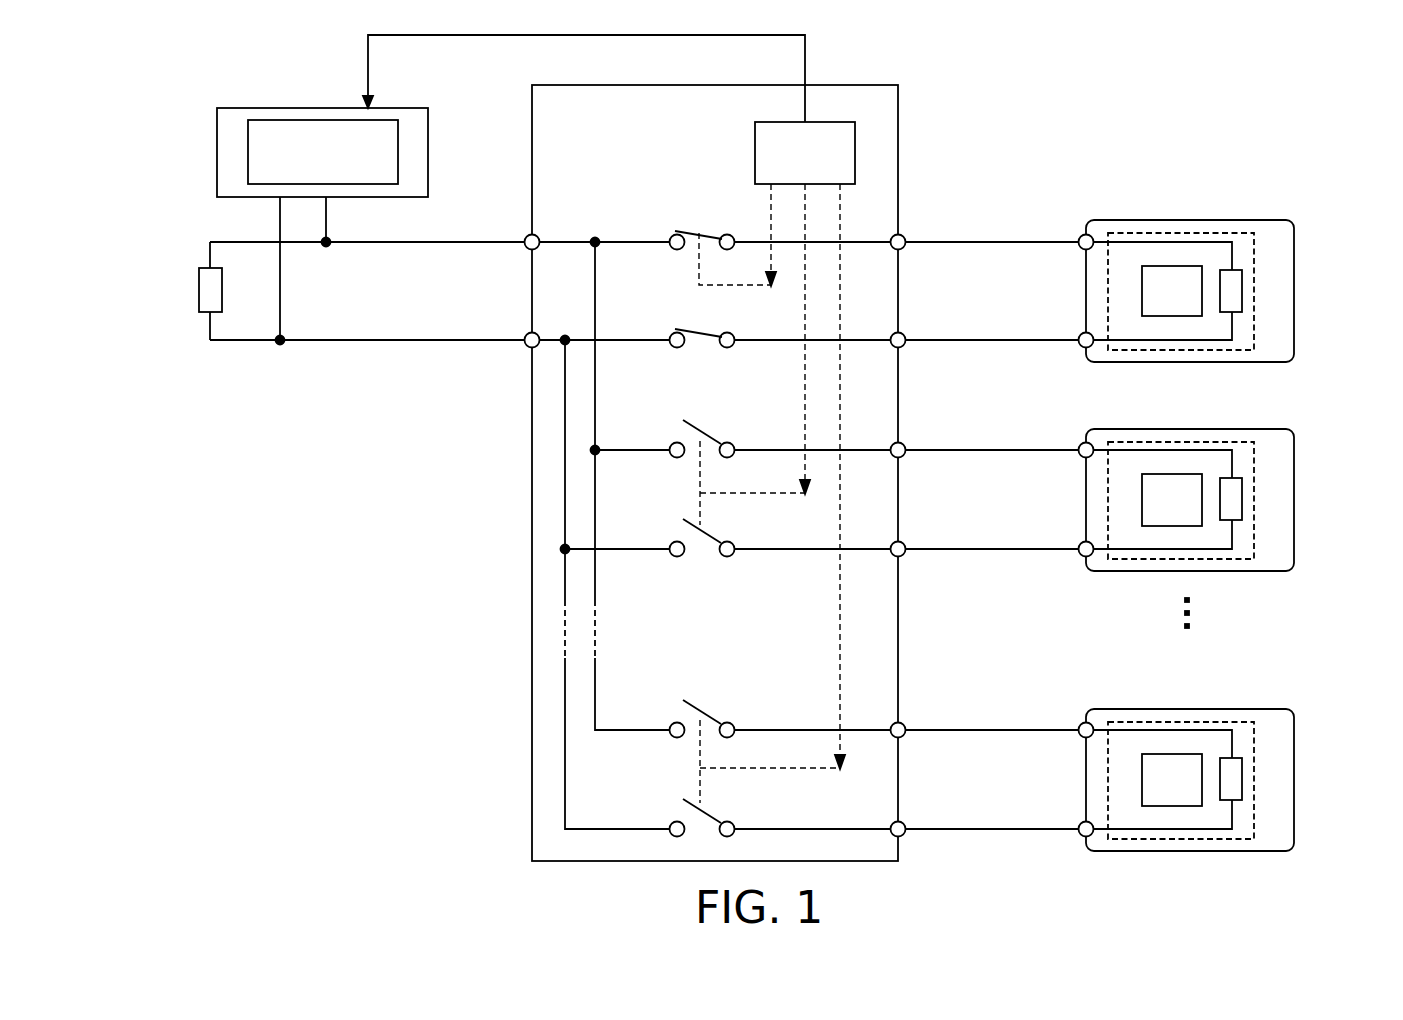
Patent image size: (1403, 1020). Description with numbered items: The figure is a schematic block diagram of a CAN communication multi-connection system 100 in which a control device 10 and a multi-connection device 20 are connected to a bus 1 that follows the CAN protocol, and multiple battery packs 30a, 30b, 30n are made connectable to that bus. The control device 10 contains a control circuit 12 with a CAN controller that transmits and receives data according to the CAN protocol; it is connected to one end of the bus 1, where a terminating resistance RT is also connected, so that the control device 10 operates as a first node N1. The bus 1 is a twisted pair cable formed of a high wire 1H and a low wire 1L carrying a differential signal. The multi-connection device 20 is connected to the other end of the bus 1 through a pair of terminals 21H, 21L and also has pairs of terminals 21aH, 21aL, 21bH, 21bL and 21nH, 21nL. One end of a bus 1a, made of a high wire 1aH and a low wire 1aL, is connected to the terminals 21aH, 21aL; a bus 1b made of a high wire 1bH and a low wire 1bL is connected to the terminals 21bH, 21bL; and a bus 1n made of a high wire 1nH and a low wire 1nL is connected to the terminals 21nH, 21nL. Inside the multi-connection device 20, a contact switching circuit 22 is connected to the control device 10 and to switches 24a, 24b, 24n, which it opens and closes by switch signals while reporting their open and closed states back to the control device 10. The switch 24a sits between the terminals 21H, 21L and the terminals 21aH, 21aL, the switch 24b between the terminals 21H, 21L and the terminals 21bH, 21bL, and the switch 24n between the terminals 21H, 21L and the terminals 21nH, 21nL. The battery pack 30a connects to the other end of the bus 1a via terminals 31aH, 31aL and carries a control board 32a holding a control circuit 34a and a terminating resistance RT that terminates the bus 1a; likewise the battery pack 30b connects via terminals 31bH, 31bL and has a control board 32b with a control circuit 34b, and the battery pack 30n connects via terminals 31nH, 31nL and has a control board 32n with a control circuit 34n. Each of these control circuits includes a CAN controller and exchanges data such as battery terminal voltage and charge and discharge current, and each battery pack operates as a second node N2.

The CAN communication multi-connection system 100 is at (1168, 102).
The control device 10 is at (229, 107).
The control circuit 12 is at (283, 119).
The first node N1 is at (320, 82).
The terminating resistance RT is at (197, 288).
The bus 1 is at (442, 394).
The high wire 1H is at (376, 244).
The low wire 1L is at (415, 342).
The multi-connection device 20 is at (878, 84).
The contact switching circuit 22 is at (836, 121).
The terminal 21H is at (524, 239).
The terminal 21L is at (527, 346).
The switch 24a is at (698, 229).
The switch 24b is at (700, 422).
The switch 24n is at (700, 702).
The terminal 21aH is at (906, 238).
The terminal 21aL is at (906, 337).
The terminal 21bH is at (906, 446).
The terminal 21bL is at (906, 545).
The terminal 21nH is at (906, 726).
The terminal 21nL is at (906, 825).
The bus 1a is at (1083, 133).
The high wire 1aH is at (998, 240).
The low wire 1aL is at (1027, 338).
The bus 1b is at (1057, 601).
The high wire 1bH is at (988, 452).
The low wire 1bL is at (1027, 551).
The bus 1n is at (1057, 882).
The high wire 1nH is at (988, 732).
The low wire 1nL is at (1027, 831).
The battery pack 30a is at (1294, 237).
The battery pack 30b is at (1294, 446).
The battery pack 30n is at (1294, 726).
The terminal 31aH is at (1084, 235).
The terminal 31aL is at (1080, 347).
The terminal 31bH is at (1080, 446).
The terminal 31bL is at (1080, 545).
The terminal 31nH is at (1080, 726).
The terminal 31nL is at (1080, 825).
The control board 32a is at (1223, 230).
The control board 32b is at (1223, 439).
The control board 32n is at (1223, 719).
The control circuit 34a is at (1163, 265).
The control circuit 34b is at (1163, 473).
The control circuit 34n is at (1163, 753).
The second node N2 is at (1292, 214).